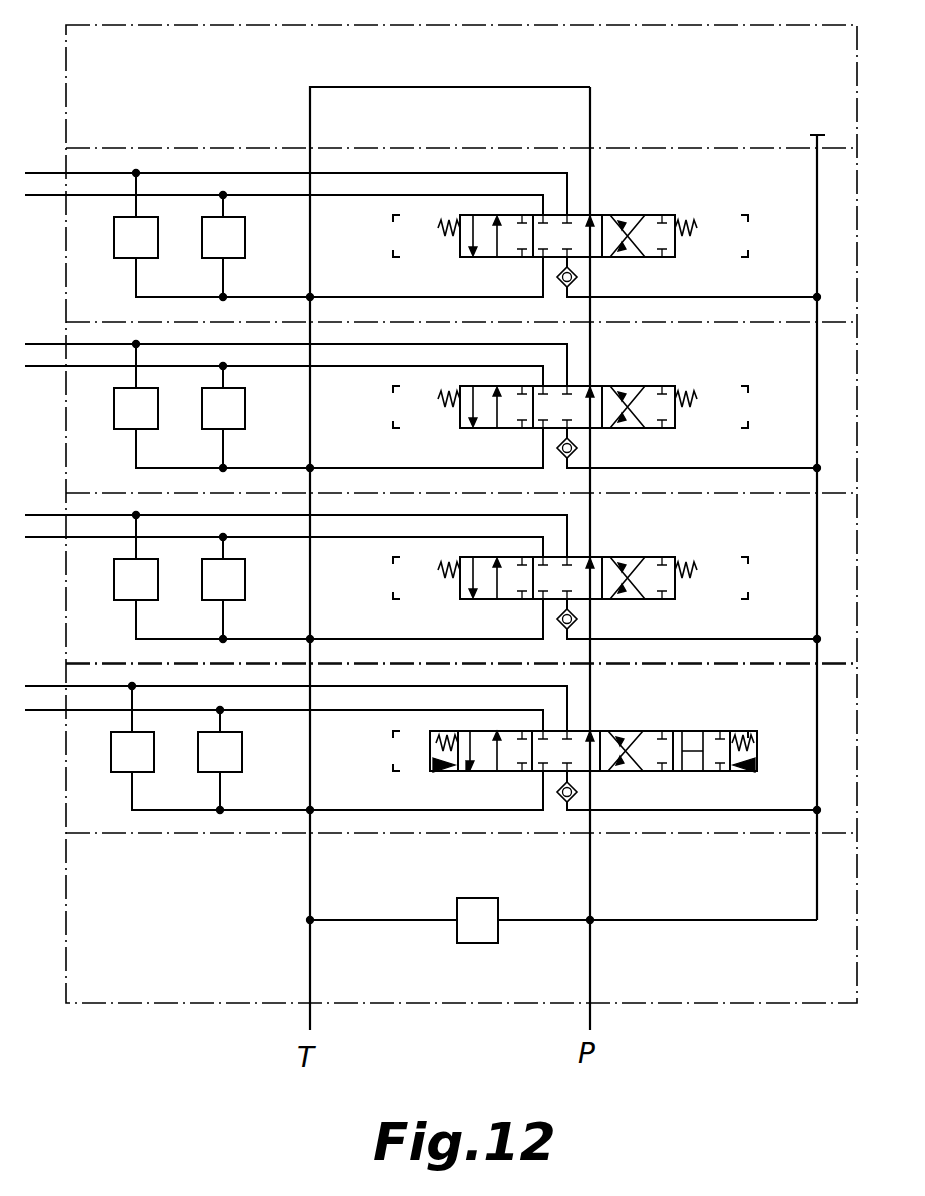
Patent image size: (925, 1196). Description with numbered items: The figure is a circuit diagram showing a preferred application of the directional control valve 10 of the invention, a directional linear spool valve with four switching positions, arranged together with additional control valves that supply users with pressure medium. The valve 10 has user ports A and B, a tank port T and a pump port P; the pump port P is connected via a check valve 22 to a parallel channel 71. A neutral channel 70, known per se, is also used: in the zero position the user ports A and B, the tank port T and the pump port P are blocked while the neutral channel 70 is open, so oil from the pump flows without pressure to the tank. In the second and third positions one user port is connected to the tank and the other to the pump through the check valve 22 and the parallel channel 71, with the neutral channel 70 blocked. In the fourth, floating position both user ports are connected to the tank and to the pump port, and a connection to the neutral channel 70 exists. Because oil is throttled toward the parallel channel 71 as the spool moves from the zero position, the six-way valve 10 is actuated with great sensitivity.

The directional control valve 10 is at (660, 713).
The check valve 22 is at (565, 812).
The neutral channel 70 is at (590, 892).
The parallel channel 71 is at (817, 881).